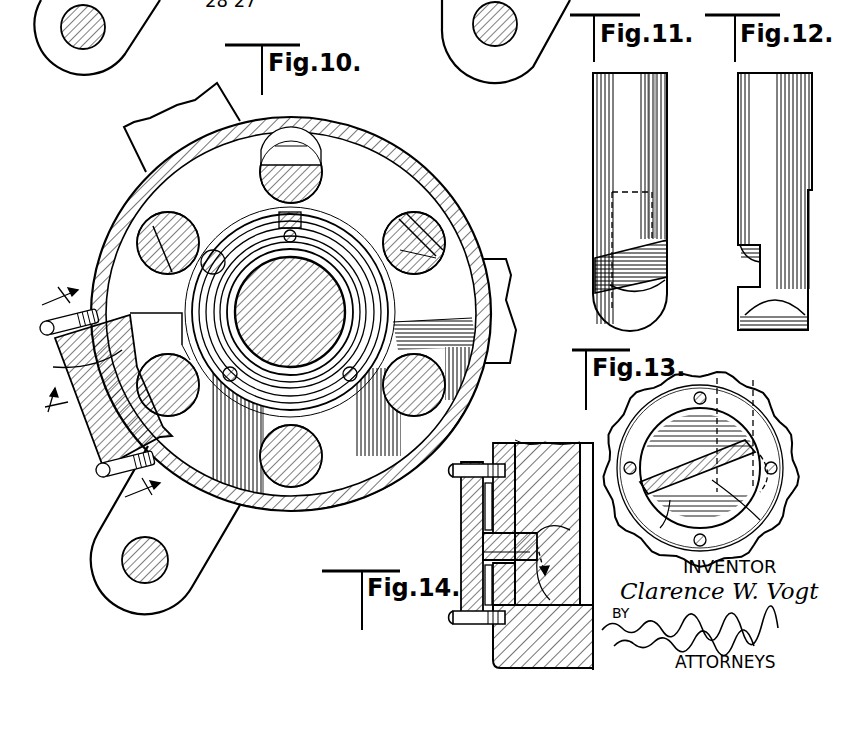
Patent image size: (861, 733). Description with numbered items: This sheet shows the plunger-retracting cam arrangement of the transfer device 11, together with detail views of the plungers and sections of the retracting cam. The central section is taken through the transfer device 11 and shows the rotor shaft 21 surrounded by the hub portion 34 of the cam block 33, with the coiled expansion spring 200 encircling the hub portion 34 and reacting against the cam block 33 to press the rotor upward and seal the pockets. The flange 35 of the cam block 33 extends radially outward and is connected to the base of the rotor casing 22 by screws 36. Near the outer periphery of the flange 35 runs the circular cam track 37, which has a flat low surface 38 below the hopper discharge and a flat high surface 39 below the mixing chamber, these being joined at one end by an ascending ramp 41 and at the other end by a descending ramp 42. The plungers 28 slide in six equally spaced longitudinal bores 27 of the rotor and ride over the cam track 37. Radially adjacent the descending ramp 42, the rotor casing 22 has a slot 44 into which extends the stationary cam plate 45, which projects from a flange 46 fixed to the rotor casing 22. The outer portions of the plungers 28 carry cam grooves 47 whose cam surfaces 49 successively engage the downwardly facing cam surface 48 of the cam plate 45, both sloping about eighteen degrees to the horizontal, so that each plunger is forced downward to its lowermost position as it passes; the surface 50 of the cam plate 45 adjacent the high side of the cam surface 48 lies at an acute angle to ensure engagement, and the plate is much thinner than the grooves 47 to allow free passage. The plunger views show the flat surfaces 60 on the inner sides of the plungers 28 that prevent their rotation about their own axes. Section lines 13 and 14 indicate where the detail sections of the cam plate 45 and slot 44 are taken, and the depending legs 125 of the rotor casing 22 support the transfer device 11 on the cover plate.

In FIG. 10, the transfer device 11 is at (53, 412).
In FIG. 10, the section line 13— 13 is at (105, 389).
In FIG. 10, the section line 14— 14 is at (170, 344).
In FIG. 10, the rotor shaft 21 is at (275, 272).
In FIG. 10, the rotor casing 22 is at (282, 512).
In FIG. 13, the rotor casing 22 is at (770, 402).
In FIG. 14, the rotor casing 22 is at (500, 443).
In FIG. 10, the longitudinal bores 27 is at (312, 148).
In FIG. 10, the plungers 28 is at (320, 178).
In FIG. 11, the plungers 28 is at (667, 148).
In FIG. 12, the plungers 28 is at (720, 148).
In FIG. 13, the plungers 28 is at (774, 410).
In FIG. 14, the plungers 28 is at (535, 455).
In FIG. 10, the cam block 33 is at (415, 428).
In FIG. 14, the cam block 33 is at (520, 630).
In FIG. 10, the hub portion 34 is at (330, 245).
In FIG. 10, the flange 35 is at (230, 152).
In FIG. 10, the screws 36 is at (218, 400).
In FIG. 10, the cam track 37 is at (393, 468).
In FIG. 10, the flat low surface 38 is at (306, 138).
In FIG. 10, the flat high surface 39 is at (357, 483).
In FIG. 10, the ascending ramp 41 is at (474, 262).
In FIG. 10, the descending ramp 42 is at (145, 302).
In FIG. 10, the slot 44 is at (72, 372).
In FIG. 13, the slot 44 is at (666, 522).
In FIG. 14, the slot 44 is at (500, 575).
In FIG. 10, the cam plate 45 is at (112, 415).
In FIG. 13, the cam plate 45 is at (680, 462).
In FIG. 14, the cam plate 45 is at (545, 560).
In FIG. 10, the flange 46 is at (62, 357).
In FIG. 14, the flange 46 is at (461, 512).
In FIG. 10, the cam grooves 47 is at (436, 224).
In FIG. 11, the cam grooves 47 is at (667, 258).
In FIG. 12, the cam grooves 47 is at (720, 266).
In FIG. 13, the cam grooves 47 is at (727, 395).
In FIG. 14, the cam grooves 47 is at (570, 530).
In FIG. 13, the cam surface 48 is at (760, 520).
In FIG. 14, the cam surface 48 is at (500, 545).
In FIG. 11, the cam surfaces 49 is at (650, 292).
In FIG. 12, the cam surfaces 49 is at (720, 298).
In FIG. 13, the cam surfaces 49 is at (770, 482).
In FIG. 14, the cam surfaces 49 is at (550, 592).
In FIG. 13, the surface 50 is at (720, 470).
In FIG. 10, the flat surfaces 60 is at (301, 217).
In FIG. 11, the flat surfaces 60 is at (612, 213).
In FIG. 12, the flat surfaces 60 is at (810, 222).
In FIG. 10, the depending legs 125 is at (140, 14).
In FIG. 10, the coiled expansion spring 200 is at (240, 226).